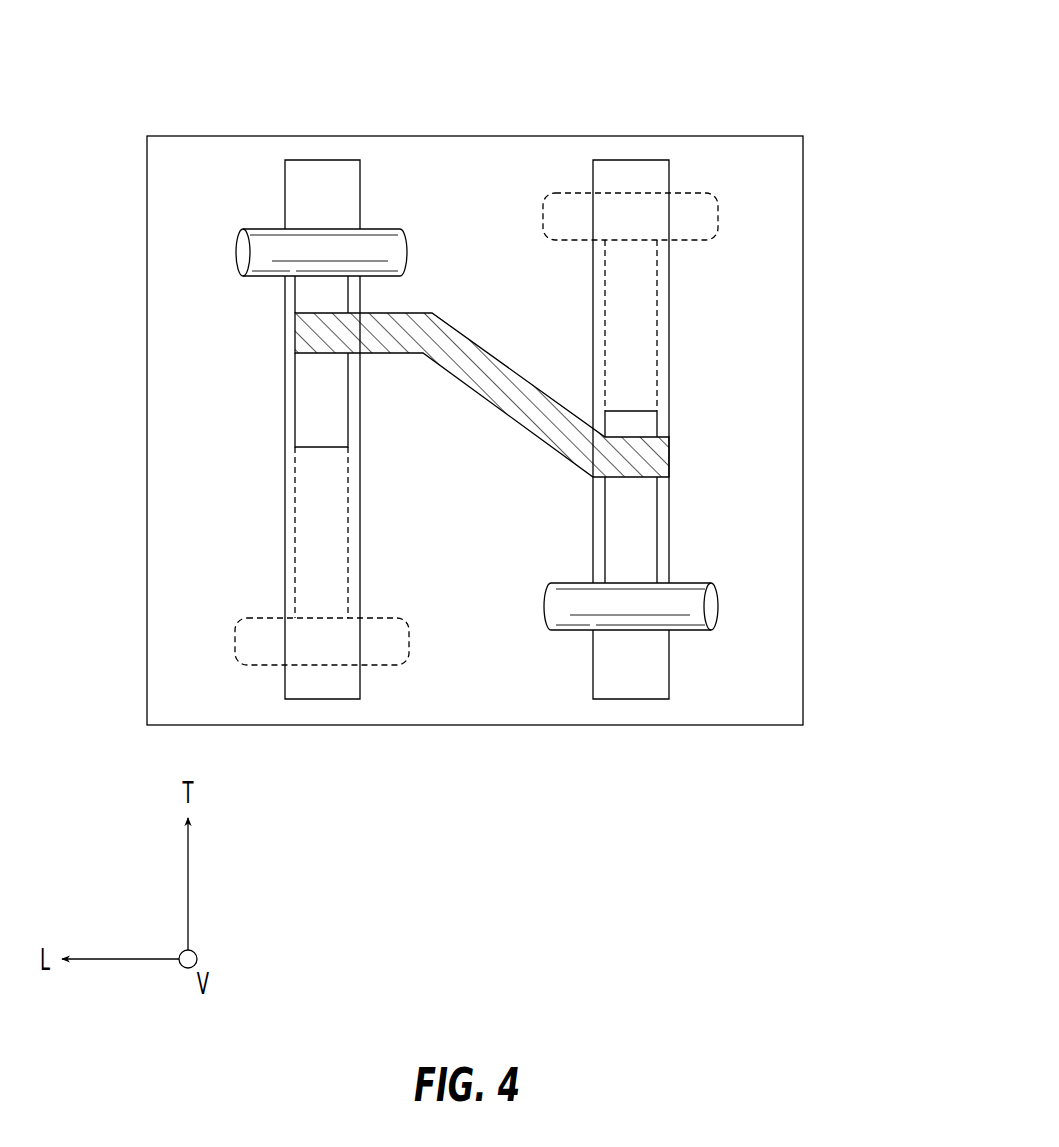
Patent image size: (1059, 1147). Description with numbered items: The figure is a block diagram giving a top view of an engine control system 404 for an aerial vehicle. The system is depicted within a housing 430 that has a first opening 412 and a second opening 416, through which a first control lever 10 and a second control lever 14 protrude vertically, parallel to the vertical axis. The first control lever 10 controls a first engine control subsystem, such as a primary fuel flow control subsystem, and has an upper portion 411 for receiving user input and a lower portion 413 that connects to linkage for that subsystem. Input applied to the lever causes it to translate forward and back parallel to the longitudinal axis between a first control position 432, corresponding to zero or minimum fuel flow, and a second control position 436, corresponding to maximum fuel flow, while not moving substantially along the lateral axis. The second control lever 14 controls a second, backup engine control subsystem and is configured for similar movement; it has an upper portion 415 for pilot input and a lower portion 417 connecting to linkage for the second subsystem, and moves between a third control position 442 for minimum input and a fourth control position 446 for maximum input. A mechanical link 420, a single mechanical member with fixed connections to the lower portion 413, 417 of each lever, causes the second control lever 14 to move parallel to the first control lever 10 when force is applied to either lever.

The first control lever 10 is at (320, 212).
The second control lever 14 is at (635, 640).
The engine control system 404 is at (834, 114).
The upper portion 411 is at (232, 255).
The first opening 412 is at (360, 198).
The lower portion 413 is at (295, 390).
The upper portion 415 is at (719, 607).
The second opening 416 is at (669, 185).
The lower portion 417 is at (660, 525).
The mechanical link 420 is at (484, 404).
The housing 430 is at (803, 425).
The first control position 432 is at (226, 642).
The second control position 436 is at (262, 292).
The third control position 442 is at (530, 608).
The fourth control position 446 is at (734, 218).